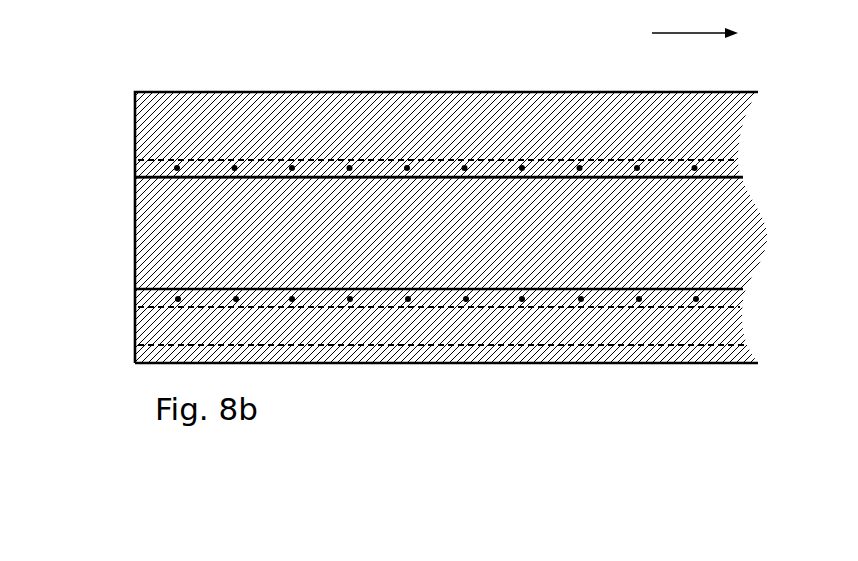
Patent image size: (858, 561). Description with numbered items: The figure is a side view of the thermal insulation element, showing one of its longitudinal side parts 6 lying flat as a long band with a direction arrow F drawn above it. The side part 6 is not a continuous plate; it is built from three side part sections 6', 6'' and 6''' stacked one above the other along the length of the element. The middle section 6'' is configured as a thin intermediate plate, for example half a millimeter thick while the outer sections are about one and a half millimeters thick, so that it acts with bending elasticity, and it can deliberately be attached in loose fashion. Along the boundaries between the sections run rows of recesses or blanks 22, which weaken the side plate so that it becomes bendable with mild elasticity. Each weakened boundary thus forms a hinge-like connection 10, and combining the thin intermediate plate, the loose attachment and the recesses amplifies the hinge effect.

The side part 6 is at (493, 227).
The side part section 6' is at (478, 117).
The side part section (intermediate plate) 6'' is at (482, 195).
The side part section 6''' is at (488, 333).
The hinge-like connection 10 is at (120, 170).
The recesses or blanks 22 is at (350, 168).
The direction of travel F is at (711, 35).